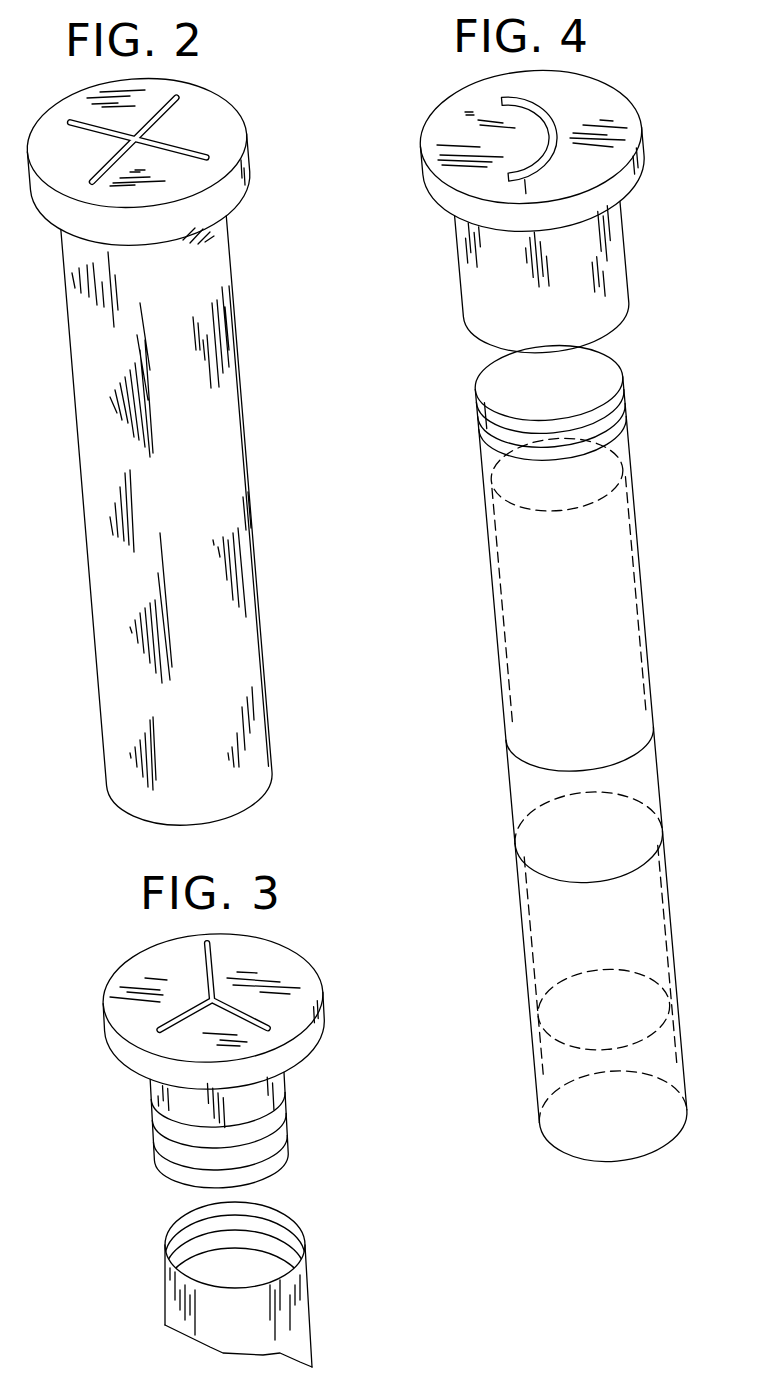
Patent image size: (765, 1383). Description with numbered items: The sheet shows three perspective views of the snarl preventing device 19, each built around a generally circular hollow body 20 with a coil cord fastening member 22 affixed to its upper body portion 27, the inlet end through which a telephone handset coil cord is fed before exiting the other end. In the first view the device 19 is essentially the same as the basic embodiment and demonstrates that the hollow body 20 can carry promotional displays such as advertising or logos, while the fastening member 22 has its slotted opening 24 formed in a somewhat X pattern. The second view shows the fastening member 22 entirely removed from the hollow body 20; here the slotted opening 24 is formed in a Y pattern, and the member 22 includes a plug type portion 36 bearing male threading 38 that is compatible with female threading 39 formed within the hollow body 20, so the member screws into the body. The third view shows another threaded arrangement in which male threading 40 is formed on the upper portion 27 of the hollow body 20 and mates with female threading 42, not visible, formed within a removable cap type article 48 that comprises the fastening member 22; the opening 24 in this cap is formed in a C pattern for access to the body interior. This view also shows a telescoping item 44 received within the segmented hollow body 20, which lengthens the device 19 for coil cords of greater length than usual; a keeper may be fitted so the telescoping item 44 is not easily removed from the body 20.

In FIG. 2, the device 19 is at (300, 124).
In FIG. 4, the device 19 is at (508, 615).
In FIG. 3, the device 19 is at (395, 985).
In FIG. 4, the hollow body 20 is at (488, 528).
In FIG. 3, the hollow body 20 is at (312, 1303).
In FIG. 4, the coil cord fastening member 22 is at (477, 180).
In FIG. 3, the coil cord fastening member 22 is at (142, 1015).
In FIG. 4, the slotted opening 24 is at (530, 137).
In FIG. 3, the slotted opening 24 is at (211, 987).
In FIG. 4, the upper body portion 27 is at (557, 474).
In FIG. 3, the plug type portion 36 is at (220, 1131).
In FIG. 3, the male threading 38 is at (220, 1132).
In FIG. 3, the female threading 39 is at (290, 1225).
In FIG. 4, the male threading 40 is at (552, 428).
In FIG. 4, the female threading 42 is at (467, 233).
In FIG. 4, the telescoping item 44 is at (584, 776).
In FIG. 4, the cap type article 48 is at (544, 280).